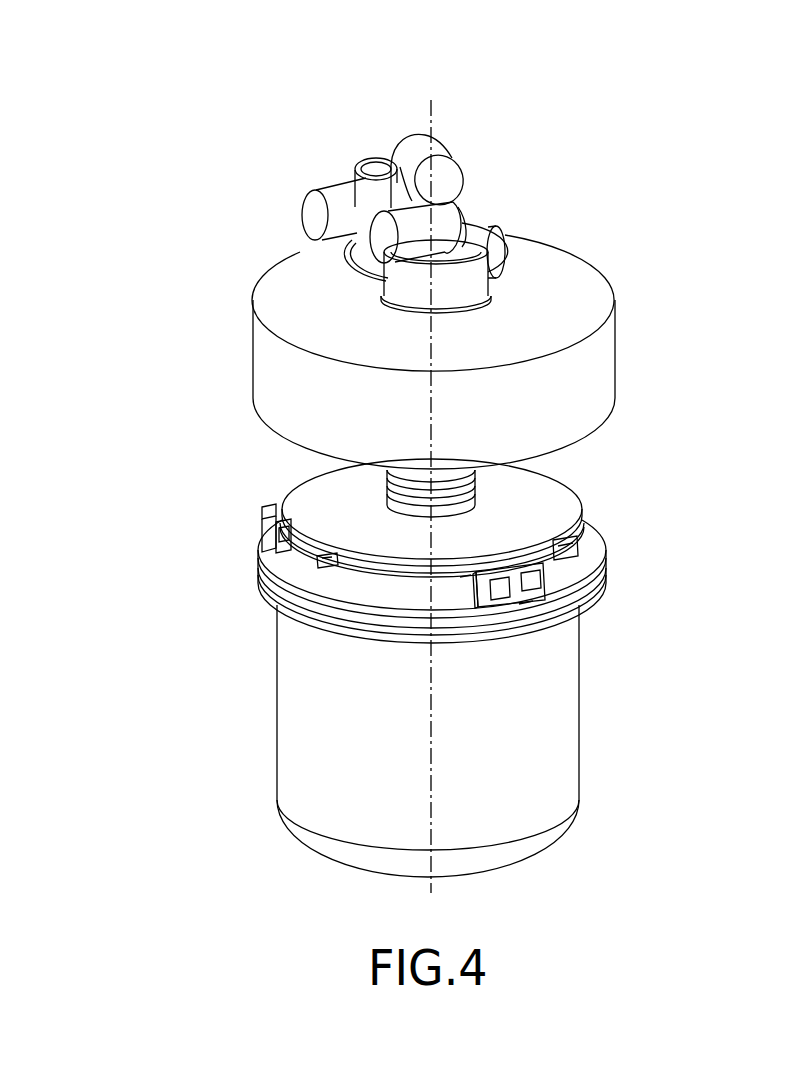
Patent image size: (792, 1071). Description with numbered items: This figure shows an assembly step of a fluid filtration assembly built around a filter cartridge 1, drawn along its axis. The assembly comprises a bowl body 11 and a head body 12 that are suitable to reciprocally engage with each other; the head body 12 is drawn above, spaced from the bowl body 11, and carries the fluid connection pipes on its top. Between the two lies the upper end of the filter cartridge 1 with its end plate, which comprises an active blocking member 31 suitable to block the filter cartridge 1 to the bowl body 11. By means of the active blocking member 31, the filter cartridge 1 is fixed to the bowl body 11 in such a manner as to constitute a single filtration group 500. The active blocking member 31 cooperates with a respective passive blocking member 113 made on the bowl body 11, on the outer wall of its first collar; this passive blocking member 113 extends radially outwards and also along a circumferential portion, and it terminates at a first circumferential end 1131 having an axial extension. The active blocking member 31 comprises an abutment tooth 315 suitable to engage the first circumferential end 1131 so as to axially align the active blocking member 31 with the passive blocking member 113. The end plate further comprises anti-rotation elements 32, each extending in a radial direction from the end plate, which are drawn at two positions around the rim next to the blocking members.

The filter cartridge 1 is at (207, 166).
The bowl body 11 is at (237, 733).
The head body 12 is at (228, 329).
The active blocking member 31 is at (257, 512).
The anti-rotation element 32 is at (327, 546).
The passive blocking member 113 is at (262, 586).
The first circumferential end 1131 is at (527, 606).
The abutment tooth 315 is at (463, 581).
The filtration group 500 is at (204, 575).